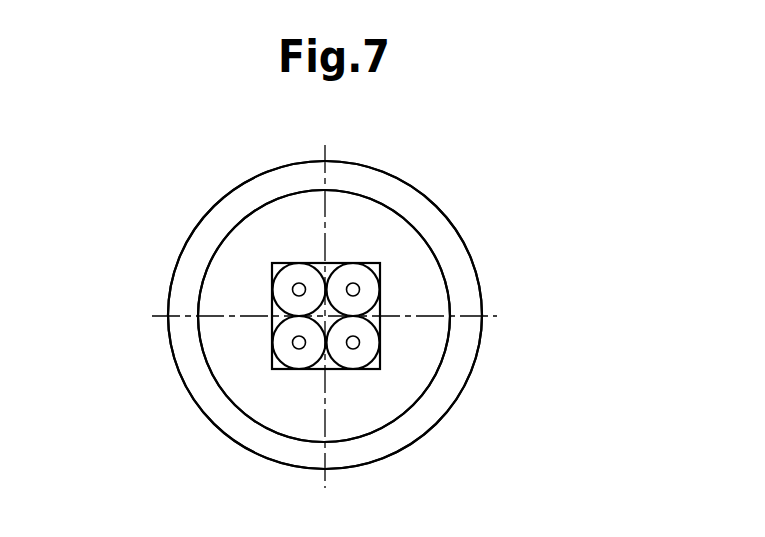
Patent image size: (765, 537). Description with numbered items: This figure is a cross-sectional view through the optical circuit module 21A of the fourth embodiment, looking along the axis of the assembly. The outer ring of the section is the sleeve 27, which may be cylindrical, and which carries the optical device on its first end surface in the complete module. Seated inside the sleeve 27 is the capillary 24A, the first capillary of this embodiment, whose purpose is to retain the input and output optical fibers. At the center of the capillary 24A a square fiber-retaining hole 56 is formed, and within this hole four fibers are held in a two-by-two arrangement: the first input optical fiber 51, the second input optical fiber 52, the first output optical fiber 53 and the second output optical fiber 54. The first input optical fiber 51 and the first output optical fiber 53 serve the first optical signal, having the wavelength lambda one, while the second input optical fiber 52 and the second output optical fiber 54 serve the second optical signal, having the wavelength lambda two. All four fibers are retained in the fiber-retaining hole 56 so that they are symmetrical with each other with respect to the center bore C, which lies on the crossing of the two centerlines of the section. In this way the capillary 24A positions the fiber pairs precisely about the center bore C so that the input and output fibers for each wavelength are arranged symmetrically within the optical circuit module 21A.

The optical circuit module 21A is at (401, 169).
The capillary 24A is at (273, 226).
The sleeve 27 is at (452, 255).
The first input optical fiber 51 is at (286, 293).
The second input optical fiber 52 is at (363, 294).
The first output optical fiber 53 is at (283, 350).
The second output optical fiber 54 is at (366, 343).
The fiber-retaining hole 56 is at (374, 264).
The center bore C is at (327, 318).